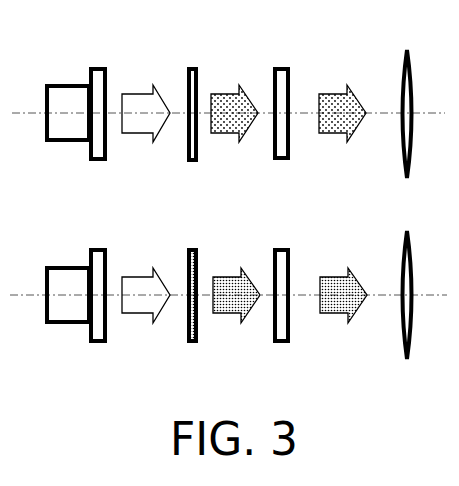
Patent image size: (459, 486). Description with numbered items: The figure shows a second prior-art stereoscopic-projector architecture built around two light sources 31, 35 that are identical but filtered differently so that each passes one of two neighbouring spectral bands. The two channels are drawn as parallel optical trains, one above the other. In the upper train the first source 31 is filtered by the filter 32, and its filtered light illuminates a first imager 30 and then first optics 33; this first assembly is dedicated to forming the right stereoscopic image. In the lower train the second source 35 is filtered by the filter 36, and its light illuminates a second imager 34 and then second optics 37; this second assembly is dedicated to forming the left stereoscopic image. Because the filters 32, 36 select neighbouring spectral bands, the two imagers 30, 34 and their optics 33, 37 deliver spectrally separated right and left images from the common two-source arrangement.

The first imager 30 is at (282, 70).
The first light source 31 is at (98, 72).
The filter 32 is at (192, 66).
The first optics 33 is at (407, 52).
The second imager 34 is at (282, 263).
The second light source 35 is at (98, 260).
The filter 36 is at (192, 247).
The second optics 37 is at (407, 235).